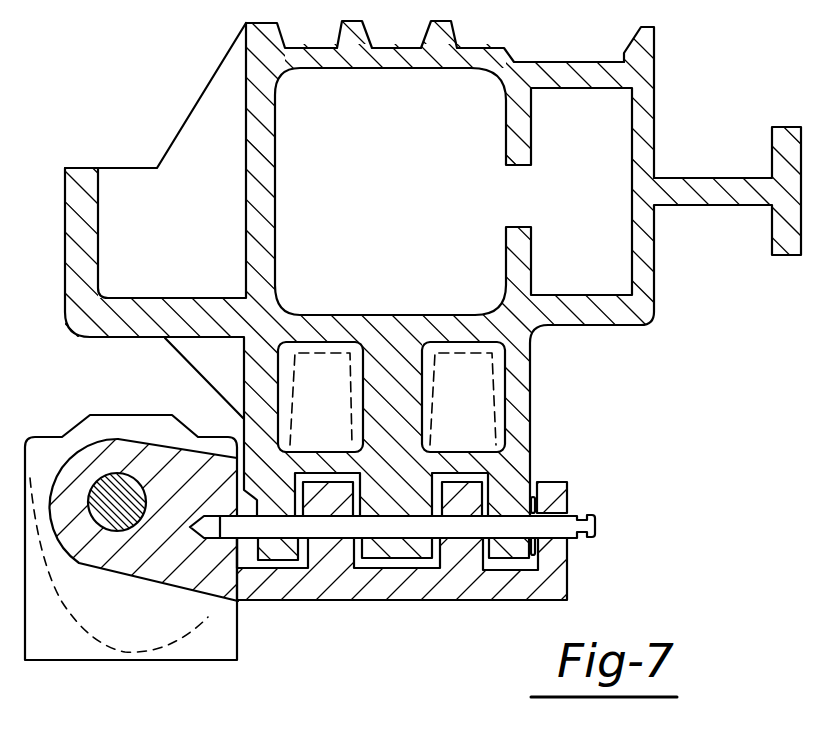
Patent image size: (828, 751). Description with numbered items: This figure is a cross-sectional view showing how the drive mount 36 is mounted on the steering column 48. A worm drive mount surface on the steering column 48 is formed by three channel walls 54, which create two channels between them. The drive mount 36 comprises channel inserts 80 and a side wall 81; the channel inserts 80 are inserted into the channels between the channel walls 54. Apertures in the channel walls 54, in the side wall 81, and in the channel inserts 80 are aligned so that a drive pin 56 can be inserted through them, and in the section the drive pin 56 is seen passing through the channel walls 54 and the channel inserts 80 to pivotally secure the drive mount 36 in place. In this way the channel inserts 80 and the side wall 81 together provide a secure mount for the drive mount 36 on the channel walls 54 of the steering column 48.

The drive mount 36 is at (180, 567).
The steering column 48 is at (652, 78).
The channel walls 54 is at (282, 550).
The drive pin 56 is at (599, 522).
The channel inserts 80 is at (330, 560).
The side wall 81 is at (554, 565).